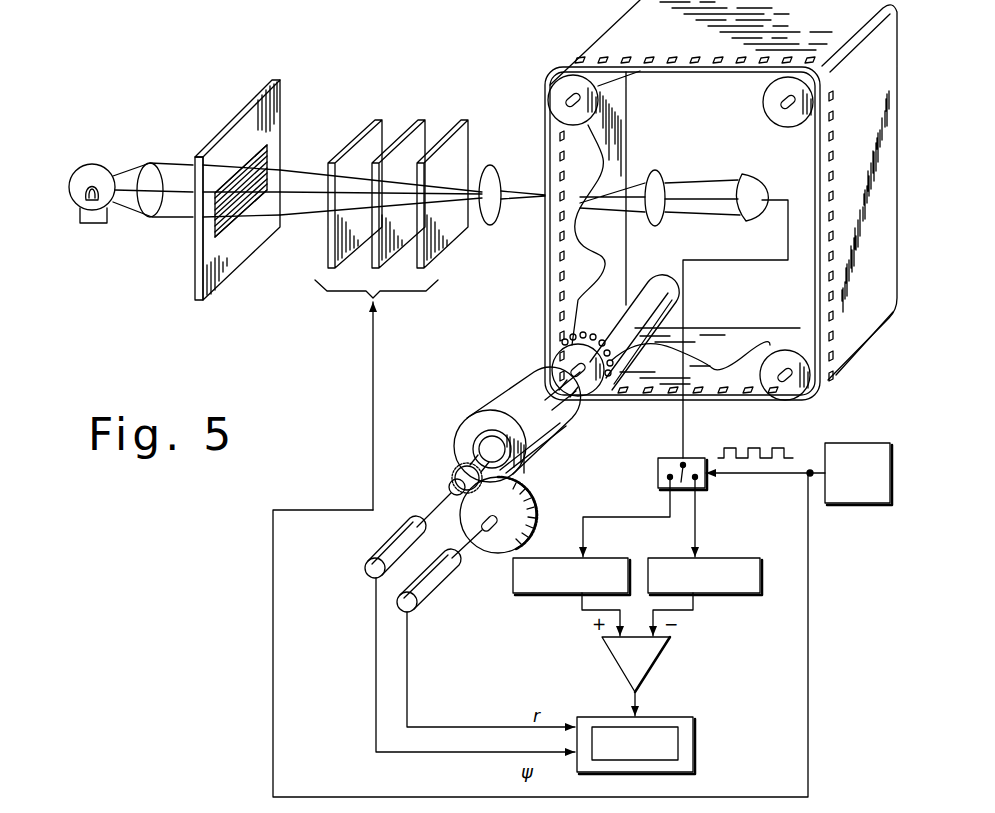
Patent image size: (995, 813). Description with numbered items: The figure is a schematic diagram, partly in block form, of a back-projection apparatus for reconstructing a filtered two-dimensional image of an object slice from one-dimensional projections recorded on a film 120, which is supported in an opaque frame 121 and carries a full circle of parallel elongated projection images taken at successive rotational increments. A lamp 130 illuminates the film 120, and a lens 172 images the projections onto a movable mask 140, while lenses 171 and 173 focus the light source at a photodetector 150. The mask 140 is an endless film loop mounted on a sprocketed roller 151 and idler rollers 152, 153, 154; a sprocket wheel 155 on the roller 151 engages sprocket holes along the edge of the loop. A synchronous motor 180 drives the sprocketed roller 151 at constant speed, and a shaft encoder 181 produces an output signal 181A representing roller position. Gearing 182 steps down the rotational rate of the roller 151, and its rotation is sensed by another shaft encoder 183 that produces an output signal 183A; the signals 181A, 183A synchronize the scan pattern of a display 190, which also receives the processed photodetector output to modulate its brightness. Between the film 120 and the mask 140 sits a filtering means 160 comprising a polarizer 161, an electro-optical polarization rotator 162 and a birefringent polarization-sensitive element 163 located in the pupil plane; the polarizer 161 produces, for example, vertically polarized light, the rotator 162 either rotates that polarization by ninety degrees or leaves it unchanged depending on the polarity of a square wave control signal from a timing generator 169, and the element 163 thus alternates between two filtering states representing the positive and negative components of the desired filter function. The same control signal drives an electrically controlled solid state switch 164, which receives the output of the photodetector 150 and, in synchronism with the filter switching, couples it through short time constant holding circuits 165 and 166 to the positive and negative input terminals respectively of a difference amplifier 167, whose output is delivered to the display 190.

The lamp 130 is at (93, 162).
The lens 171 is at (152, 160).
The film 120 is at (272, 158).
The opaque frame 121 is at (203, 284).
The polarizer 161 is at (352, 147).
The electro-optical polarization rotator 162 is at (405, 140).
The birefringent polarization-sensitive element 163 is at (452, 135).
The filtering means 160 is at (412, 292).
The lens 172 is at (495, 163).
The movable mask 140 is at (543, 307).
The idler roller 152 is at (637, 82).
The idler roller 153 is at (762, 107).
The idler roller 154 is at (807, 326).
The lens 173 is at (656, 170).
The photodetector 150 is at (742, 173).
The sprocketed roller 151 is at (656, 280).
The sprocket wheel 155 is at (607, 343).
The synchronous motor 180 is at (498, 390).
The gearing 182 is at (448, 470).
The shaft encoder 181 is at (369, 557).
The shaft encoder 183 is at (443, 582).
The output signal 181A is at (422, 752).
The output signal 183A is at (460, 727).
The electrically controlled solid state switch 164 is at (658, 460).
The holding circuit 165 is at (606, 557).
The holding circuit 166 is at (723, 557).
The difference amplifier 167 is at (612, 657).
The timing generator 169 is at (857, 443).
The display 190 is at (697, 725).